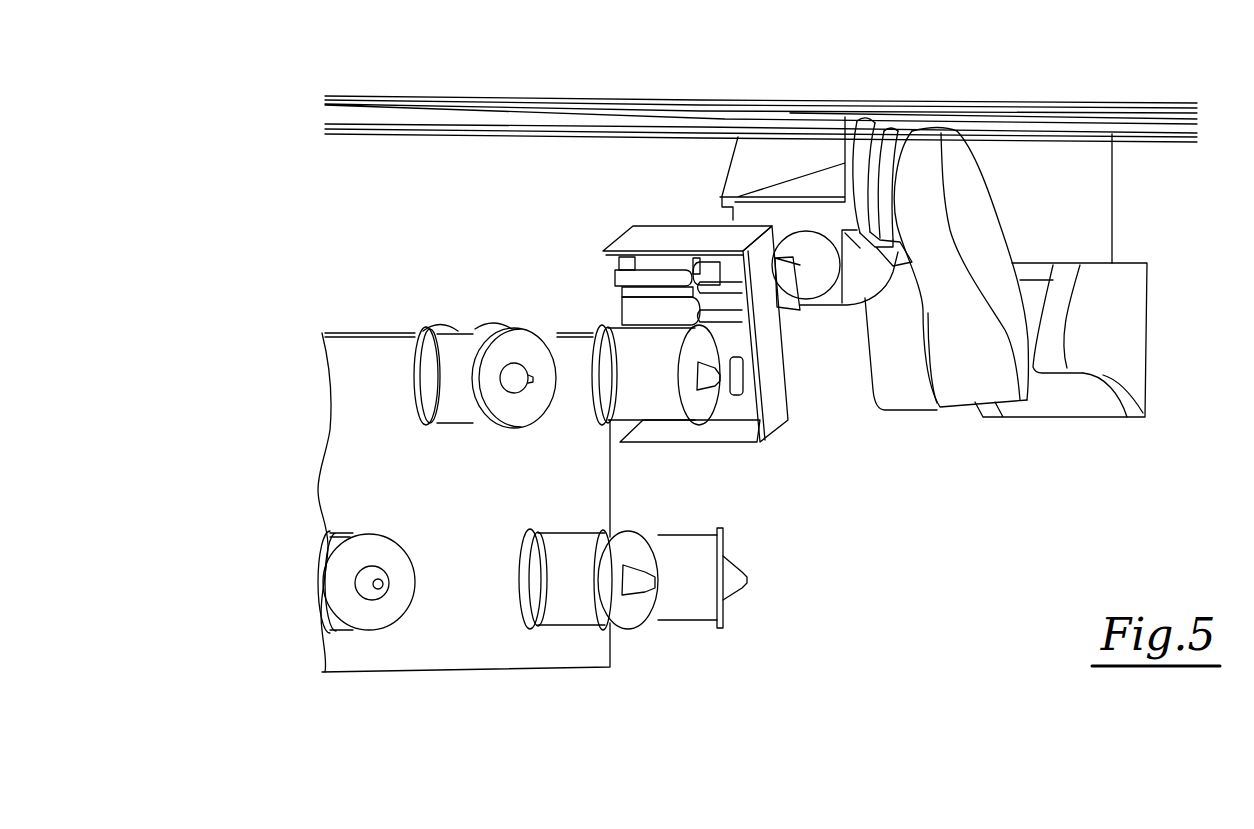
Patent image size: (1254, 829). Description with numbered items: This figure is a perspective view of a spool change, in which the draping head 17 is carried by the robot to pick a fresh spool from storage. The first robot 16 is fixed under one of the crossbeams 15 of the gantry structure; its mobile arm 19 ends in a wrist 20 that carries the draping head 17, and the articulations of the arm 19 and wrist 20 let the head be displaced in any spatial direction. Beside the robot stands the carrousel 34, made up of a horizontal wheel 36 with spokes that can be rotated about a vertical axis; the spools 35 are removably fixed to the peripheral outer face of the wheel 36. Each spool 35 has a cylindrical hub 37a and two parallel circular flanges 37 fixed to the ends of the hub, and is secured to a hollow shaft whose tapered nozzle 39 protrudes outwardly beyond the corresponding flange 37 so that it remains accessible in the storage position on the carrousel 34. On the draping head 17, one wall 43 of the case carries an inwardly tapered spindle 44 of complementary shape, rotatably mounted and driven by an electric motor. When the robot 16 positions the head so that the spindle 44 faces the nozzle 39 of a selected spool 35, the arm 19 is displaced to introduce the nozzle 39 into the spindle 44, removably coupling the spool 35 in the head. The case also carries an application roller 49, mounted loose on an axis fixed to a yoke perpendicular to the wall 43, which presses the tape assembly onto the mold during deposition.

The crossbeam 15 is at (764, 114).
The first robot 16 is at (1010, 445).
The draping head 17 is at (617, 237).
The mobile arm 19 is at (753, 215).
The end wrist 20 is at (817, 273).
The carrousel 34 is at (347, 430).
The spool 35 is at (680, 531).
The horizontal wheel 36 is at (338, 368).
The circular flange 37 is at (340, 562).
The cylindrical hub 37a is at (620, 347).
The tapered nozzle 39 is at (708, 380).
The wall of the case 43 is at (780, 357).
The tapered spindle 44 is at (742, 382).
The application roller 49 is at (623, 278).